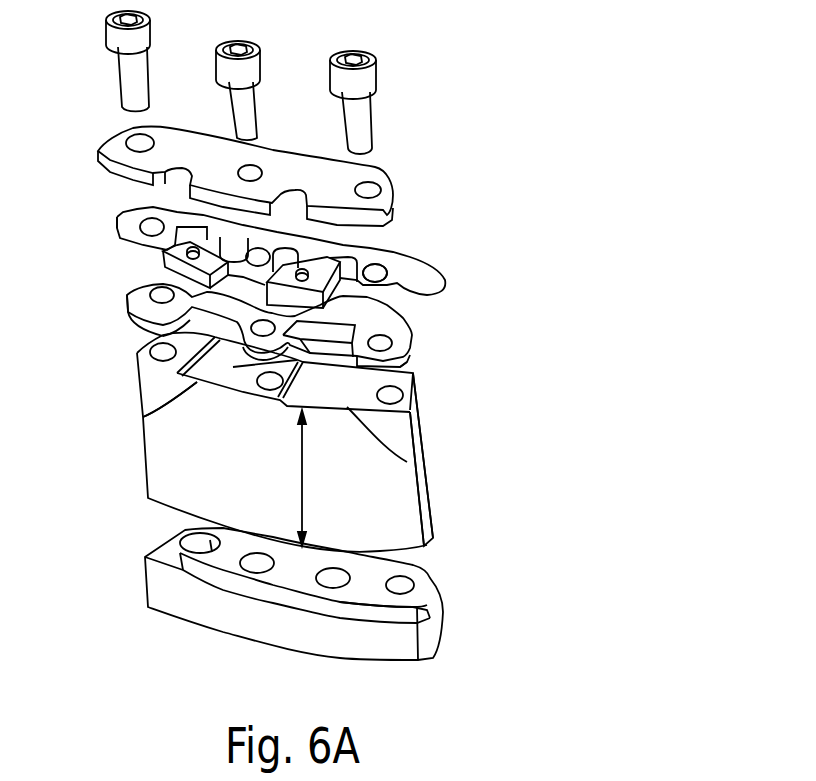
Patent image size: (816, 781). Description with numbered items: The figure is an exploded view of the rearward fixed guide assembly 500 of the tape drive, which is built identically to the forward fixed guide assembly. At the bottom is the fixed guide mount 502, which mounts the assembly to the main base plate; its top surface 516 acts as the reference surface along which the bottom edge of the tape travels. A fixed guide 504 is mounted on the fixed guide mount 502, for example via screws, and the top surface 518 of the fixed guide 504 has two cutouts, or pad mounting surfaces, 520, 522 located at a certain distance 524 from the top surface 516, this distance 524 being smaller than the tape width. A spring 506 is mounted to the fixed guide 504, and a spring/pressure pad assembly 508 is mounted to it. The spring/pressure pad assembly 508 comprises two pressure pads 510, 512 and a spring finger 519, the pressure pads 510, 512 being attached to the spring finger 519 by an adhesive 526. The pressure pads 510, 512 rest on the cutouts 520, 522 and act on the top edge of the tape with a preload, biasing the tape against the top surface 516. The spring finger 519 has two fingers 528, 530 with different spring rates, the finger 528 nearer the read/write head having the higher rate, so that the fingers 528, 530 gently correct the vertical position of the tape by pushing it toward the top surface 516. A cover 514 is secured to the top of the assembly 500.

The rearward fixed guide assembly 500 is at (498, 213).
The fixed guide mount 502 is at (440, 635).
The fixed guide 504 is at (408, 490).
The spring 506 is at (407, 367).
The spring/pressure pad assembly 508 is at (400, 293).
The pressure pad 510 is at (153, 267).
The pressure pad 512 is at (403, 313).
The cover 514 is at (385, 165).
The top surface of the fixed guide mount 516 is at (363, 592).
The top surface of the fixed guide 518 is at (413, 395).
The spring finger 519 is at (130, 215).
The cutout 520 is at (152, 415).
The cutout 522 is at (395, 456).
The distance 524 is at (302, 493).
The adhesive 526 is at (143, 317).
The finger 528 is at (163, 247).
The finger 530 is at (397, 257).